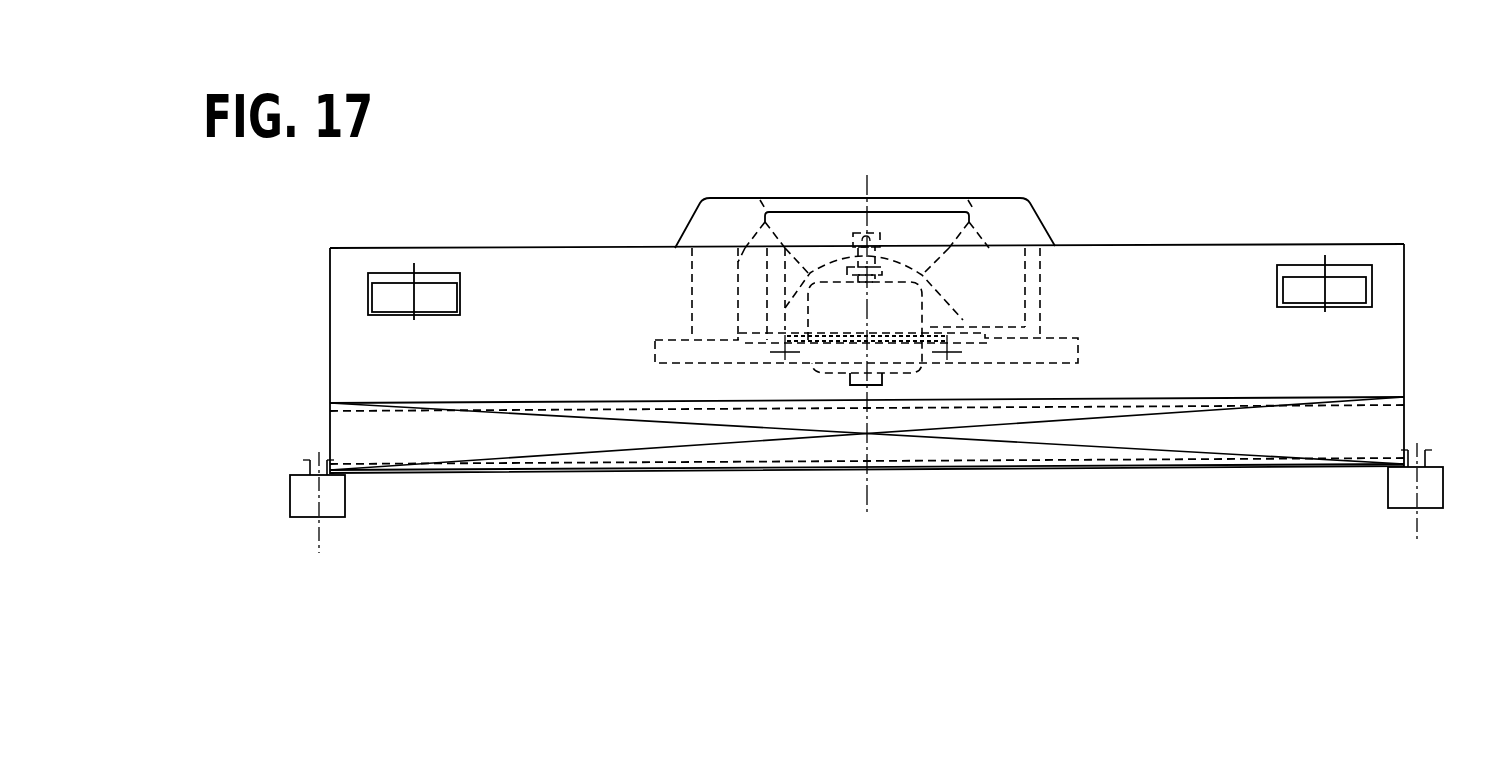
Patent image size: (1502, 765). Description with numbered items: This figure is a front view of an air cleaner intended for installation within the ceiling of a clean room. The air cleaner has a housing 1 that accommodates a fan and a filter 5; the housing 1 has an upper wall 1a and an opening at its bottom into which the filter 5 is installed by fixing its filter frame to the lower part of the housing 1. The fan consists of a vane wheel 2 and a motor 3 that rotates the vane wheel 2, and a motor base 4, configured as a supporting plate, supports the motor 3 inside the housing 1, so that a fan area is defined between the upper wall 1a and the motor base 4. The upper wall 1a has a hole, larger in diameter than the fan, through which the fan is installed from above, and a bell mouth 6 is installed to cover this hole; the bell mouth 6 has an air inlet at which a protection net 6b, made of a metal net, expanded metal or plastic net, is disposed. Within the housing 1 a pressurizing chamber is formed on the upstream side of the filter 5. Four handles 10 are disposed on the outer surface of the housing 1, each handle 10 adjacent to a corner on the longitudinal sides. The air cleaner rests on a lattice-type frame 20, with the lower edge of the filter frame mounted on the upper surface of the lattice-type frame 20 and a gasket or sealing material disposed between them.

The housing 1 is at (1404, 348).
The upper wall 1a is at (1225, 245).
The vane wheel 2 is at (1027, 290).
The motor 3 is at (834, 312).
The motor base 4 is at (975, 340).
The filter 5 is at (1185, 473).
The bell mouth 6 is at (1033, 220).
The protection net 6b is at (943, 198).
The handle 10 is at (1372, 280).
The lattice-type frame 20 is at (335, 518).